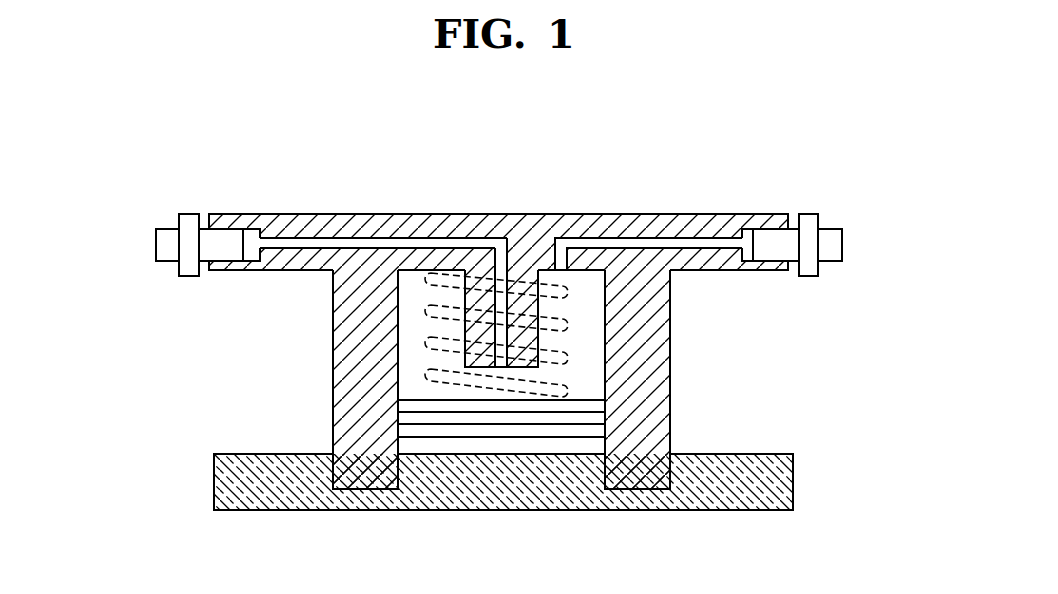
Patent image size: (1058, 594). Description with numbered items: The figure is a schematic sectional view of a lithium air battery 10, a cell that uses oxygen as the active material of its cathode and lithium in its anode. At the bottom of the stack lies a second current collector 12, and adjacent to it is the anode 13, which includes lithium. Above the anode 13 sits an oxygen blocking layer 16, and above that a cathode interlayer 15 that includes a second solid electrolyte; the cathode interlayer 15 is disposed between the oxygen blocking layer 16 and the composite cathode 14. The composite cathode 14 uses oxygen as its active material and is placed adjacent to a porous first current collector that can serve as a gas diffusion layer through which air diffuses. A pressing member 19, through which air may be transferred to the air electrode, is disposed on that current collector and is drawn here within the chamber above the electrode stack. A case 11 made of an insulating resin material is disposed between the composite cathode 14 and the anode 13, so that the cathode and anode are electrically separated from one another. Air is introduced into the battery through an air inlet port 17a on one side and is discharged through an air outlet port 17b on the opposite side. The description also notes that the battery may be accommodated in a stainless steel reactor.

The lithium air battery 10 is at (766, 166).
The case 11 is at (337, 324).
The second current collector 12 is at (793, 484).
The anode 13 is at (598, 448).
The composite cathode 14 is at (595, 402).
The cathode interlayer 15 is at (593, 417).
The oxygen blocking layer 16 is at (597, 437).
The air inlet port 17a is at (132, 244).
The air outlet port 17b is at (855, 243).
The pressing member 19 is at (569, 328).